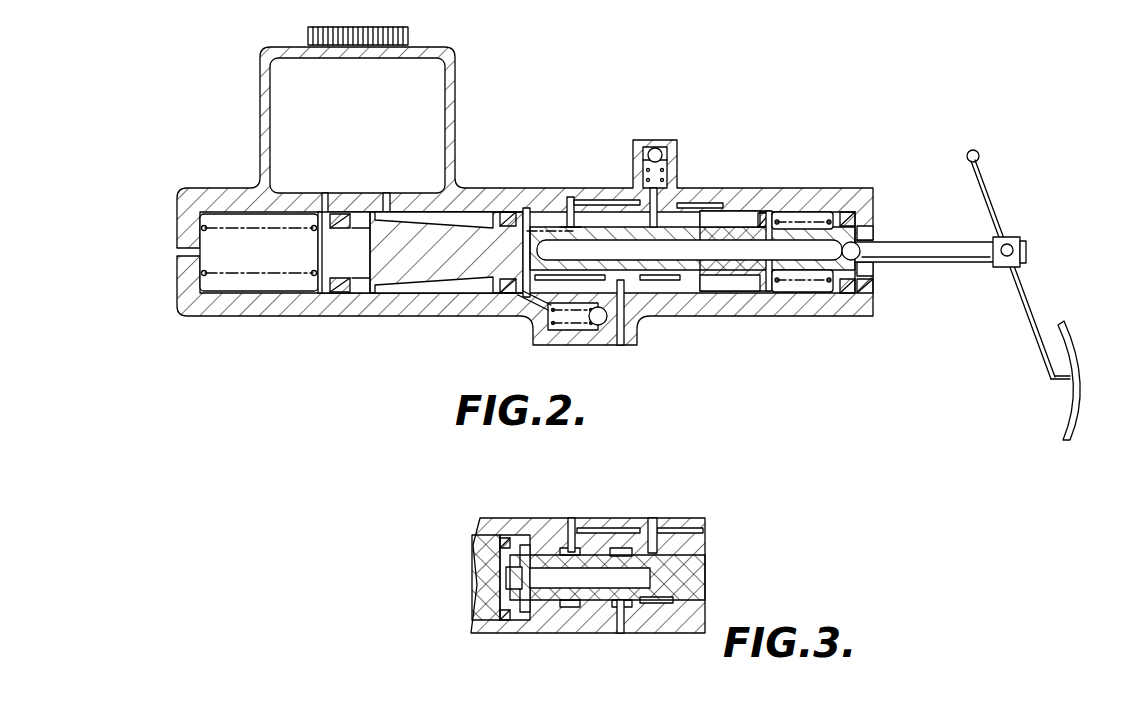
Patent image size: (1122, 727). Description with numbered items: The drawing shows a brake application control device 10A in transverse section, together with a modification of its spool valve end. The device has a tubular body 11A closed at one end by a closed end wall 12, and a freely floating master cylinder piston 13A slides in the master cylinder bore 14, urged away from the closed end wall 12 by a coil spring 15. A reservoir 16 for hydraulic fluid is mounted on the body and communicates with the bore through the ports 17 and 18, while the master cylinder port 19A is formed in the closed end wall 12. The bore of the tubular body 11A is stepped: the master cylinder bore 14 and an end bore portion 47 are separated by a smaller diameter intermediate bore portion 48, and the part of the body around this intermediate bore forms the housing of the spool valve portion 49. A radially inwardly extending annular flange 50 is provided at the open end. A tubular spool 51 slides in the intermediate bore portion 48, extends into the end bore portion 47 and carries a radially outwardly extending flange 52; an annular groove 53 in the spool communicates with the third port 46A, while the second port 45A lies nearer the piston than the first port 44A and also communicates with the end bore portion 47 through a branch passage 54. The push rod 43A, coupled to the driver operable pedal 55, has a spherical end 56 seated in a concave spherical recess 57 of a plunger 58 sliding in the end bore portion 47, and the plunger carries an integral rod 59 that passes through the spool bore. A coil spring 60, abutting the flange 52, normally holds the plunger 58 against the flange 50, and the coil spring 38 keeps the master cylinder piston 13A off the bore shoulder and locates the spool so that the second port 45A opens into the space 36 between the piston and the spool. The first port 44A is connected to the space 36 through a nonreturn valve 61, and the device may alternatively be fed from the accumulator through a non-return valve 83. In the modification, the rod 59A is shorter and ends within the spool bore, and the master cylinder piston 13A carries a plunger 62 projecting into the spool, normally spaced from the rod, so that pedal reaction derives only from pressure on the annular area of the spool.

In FIG. 2, the master cylinder assembly 10A is at (523, 201).
In FIG. 2, the tubular body 11A is at (470, 305).
In FIG. 2, the closed end wall 12 is at (183, 232).
In FIG. 2, the master cylinder piston 13A is at (447, 262).
In FIG. 3, the master cylinder piston 13A is at (490, 580).
In FIG. 2, the master cylinder bore 14 is at (383, 295).
In FIG. 2, the coil spring 15 is at (243, 290).
In FIG. 2, the reservoir 16 is at (285, 93).
In FIG. 2, the port 17 is at (323, 204).
In FIG. 2, the port 18 is at (390, 204).
In FIG. 2, the master cylinder port 19A is at (190, 255).
In FIG. 2, the space 36 is at (497, 212).
In FIG. 3, the space 36 is at (545, 540).
In FIG. 2, the coil spring 38 is at (520, 300).
In FIG. 2, the push rod 43A is at (938, 250).
In FIG. 2, the first port 44A is at (621, 340).
In FIG. 3, the first port 44A is at (625, 620).
In FIG. 2, the second port 45A is at (567, 200).
In FIG. 3, the second port 45A is at (570, 525).
In FIG. 2, the third port 46A is at (668, 208).
In FIG. 3, the third port 46A is at (665, 535).
In FIG. 2, the end bore portion 47 is at (783, 296).
In FIG. 2, the smaller diameter intermediate bore portion 48 is at (550, 208).
In FIG. 2, the spool valve portion 49 is at (737, 266).
In FIG. 2, the annular flange 50 is at (863, 287).
In FIG. 2, the tubular spool 51 is at (607, 234).
In FIG. 3, the tubular spool 51 is at (695, 565).
In FIG. 2, the flange 52 is at (765, 215).
In FIG. 2, the annular groove 53 is at (657, 280).
In FIG. 2, the branch passage 54 is at (733, 196).
In FIG. 3, the branch passage 54 is at (612, 527).
In FIG. 2, the driver operable pedal 55 is at (1075, 360).
In FIG. 2, the spherical end 56 is at (870, 267).
In FIG. 2, the concave spherical recess 57 is at (870, 240).
In FIG. 2, the plunger 58 is at (860, 303).
In FIG. 2, the rod 59 is at (807, 258).
In FIG. 3, the rod 59A is at (695, 585).
In FIG. 2, the coil spring 60 is at (807, 220).
In FIG. 2, the nonreturn valve 61 is at (592, 322).
In FIG. 3, the plunger 62 is at (548, 600).
In FIG. 2, the non-return valve 83 is at (668, 154).